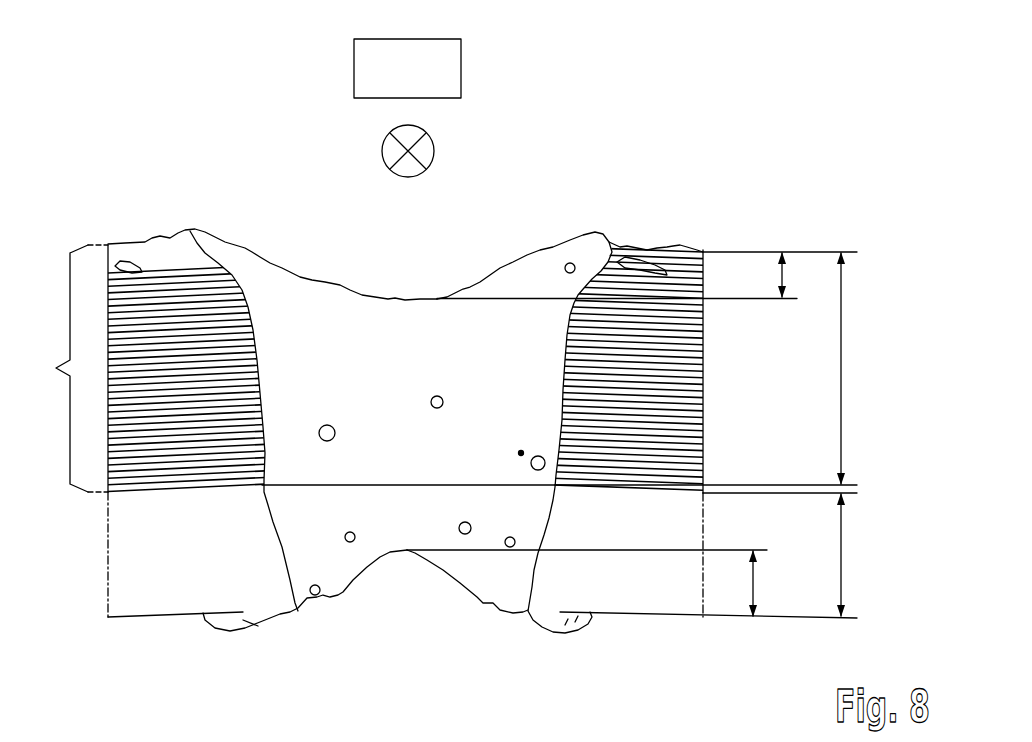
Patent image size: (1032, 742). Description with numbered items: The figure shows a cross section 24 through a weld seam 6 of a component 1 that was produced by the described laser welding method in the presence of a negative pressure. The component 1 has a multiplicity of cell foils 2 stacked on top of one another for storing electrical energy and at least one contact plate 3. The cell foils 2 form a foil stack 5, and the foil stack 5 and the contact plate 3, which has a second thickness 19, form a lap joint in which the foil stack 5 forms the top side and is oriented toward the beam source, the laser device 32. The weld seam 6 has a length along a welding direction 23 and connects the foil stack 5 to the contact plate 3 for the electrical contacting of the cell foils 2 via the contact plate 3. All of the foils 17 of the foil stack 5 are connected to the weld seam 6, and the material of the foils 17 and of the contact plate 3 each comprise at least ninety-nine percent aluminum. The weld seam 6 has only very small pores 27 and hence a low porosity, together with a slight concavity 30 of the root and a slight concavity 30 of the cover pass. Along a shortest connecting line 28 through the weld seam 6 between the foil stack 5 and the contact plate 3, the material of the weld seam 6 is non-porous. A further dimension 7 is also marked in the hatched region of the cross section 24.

The component 1 is at (720, 178).
The cell foils 2 is at (697, 362).
The contact plate 3 is at (690, 535).
The foil stack 5 is at (69, 368).
The weld seam 6 is at (328, 550).
The first height 7 is at (843, 387).
The foils 17 is at (127, 395).
The second thickness 19 is at (843, 560).
The welding direction 23 is at (380, 150).
The cross section 24 is at (652, 178).
The pores 27 is at (327, 441).
The shortest connecting line 28 is at (291, 486).
The concavity 30 is at (782, 273).
The laser device 32 is at (350, 67).